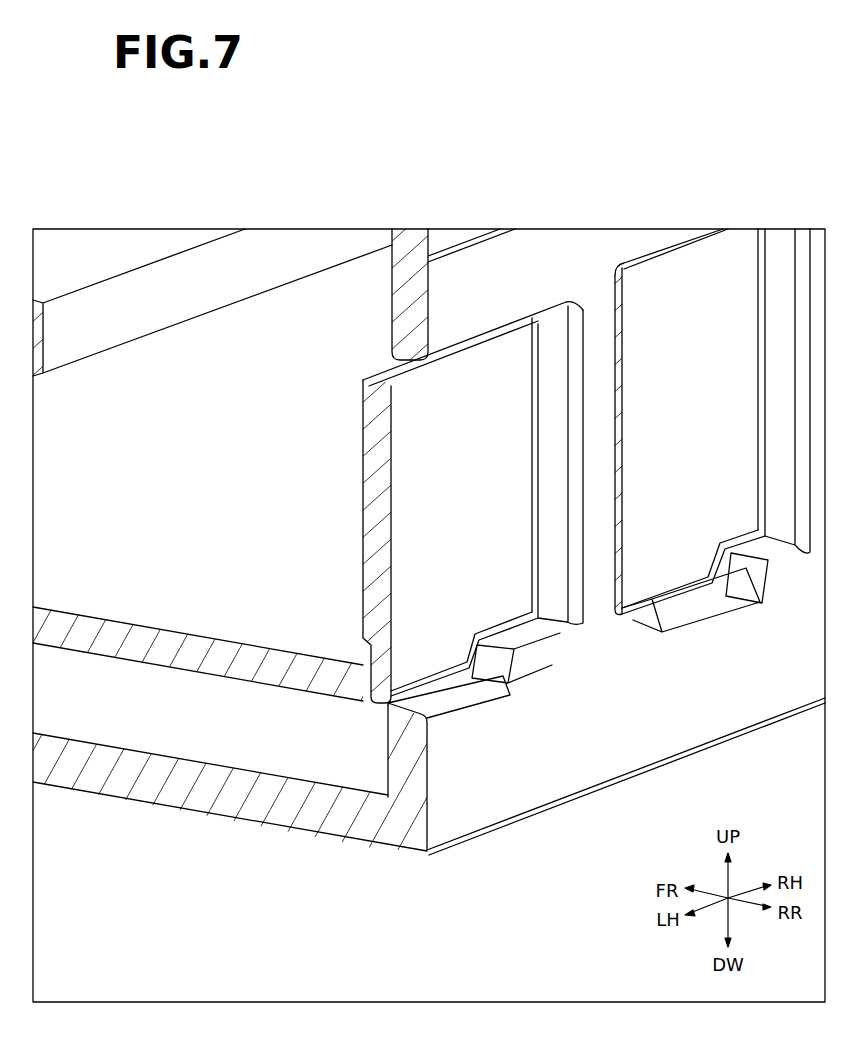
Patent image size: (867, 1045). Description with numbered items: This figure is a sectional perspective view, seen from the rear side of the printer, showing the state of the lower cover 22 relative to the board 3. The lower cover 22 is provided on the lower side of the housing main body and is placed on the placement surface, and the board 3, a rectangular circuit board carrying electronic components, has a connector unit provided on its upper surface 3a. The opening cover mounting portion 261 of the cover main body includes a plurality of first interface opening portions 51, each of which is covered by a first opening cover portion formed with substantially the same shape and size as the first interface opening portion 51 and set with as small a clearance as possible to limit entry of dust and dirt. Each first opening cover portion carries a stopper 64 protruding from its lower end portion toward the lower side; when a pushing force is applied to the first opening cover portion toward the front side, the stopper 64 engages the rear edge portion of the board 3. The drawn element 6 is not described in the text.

The board 3 is at (197, 653).
The upper surface 3a is at (157, 483).
The lower cover 22 is at (110, 718).
The first interface opening portion 51 is at (476, 345).
The partition plate 6 is at (415, 512).
The stopper 64 is at (428, 660).
The opening cover mounting portion 261 is at (572, 772).